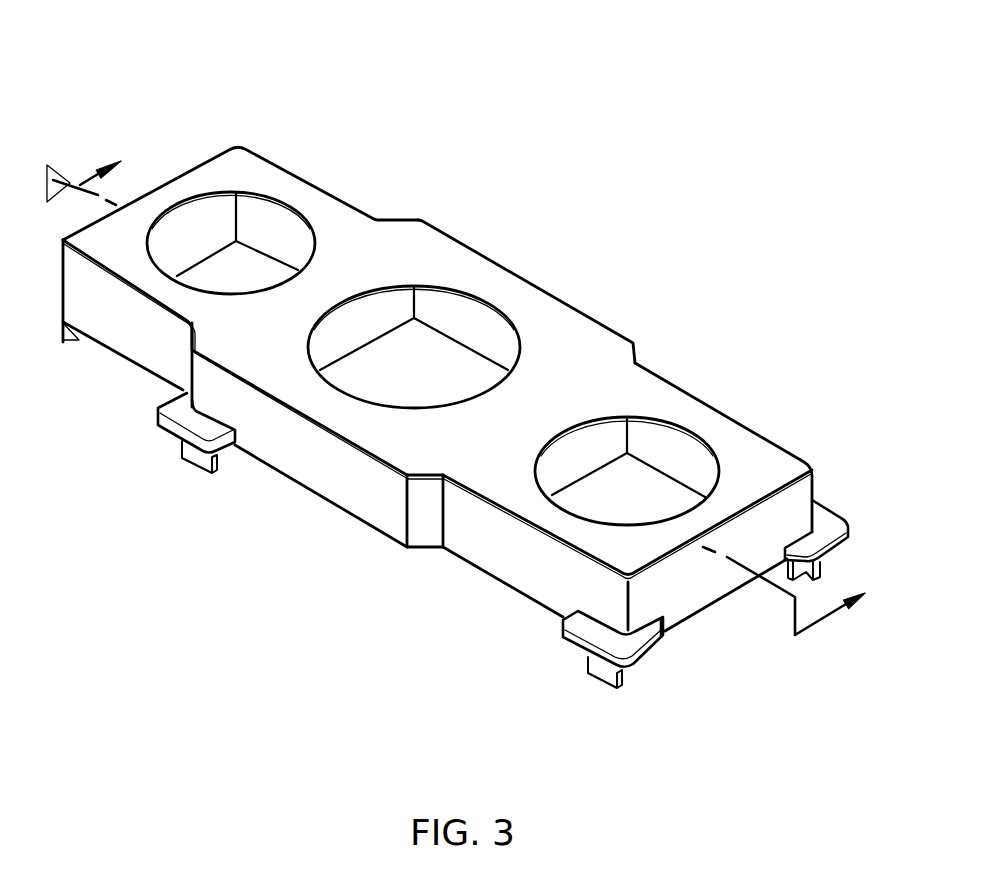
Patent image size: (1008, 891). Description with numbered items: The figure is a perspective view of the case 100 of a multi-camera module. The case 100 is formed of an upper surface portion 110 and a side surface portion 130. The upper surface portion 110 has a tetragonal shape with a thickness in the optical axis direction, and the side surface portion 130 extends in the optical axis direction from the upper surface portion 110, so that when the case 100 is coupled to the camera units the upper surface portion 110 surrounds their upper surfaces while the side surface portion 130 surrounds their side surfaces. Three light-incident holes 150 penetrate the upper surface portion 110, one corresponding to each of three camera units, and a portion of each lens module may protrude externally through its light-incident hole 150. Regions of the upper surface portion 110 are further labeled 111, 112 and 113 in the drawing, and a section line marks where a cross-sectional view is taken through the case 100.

The case 100 is at (206, 49).
The upper surface portion 110 is at (805, 318).
The first plate portion 111 is at (493, 282).
The second plate portion 112 is at (700, 417).
The third plate portion 113 is at (330, 212).
The side surface portion 130 is at (192, 228).
The light-incident hole 150 is at (213, 283).